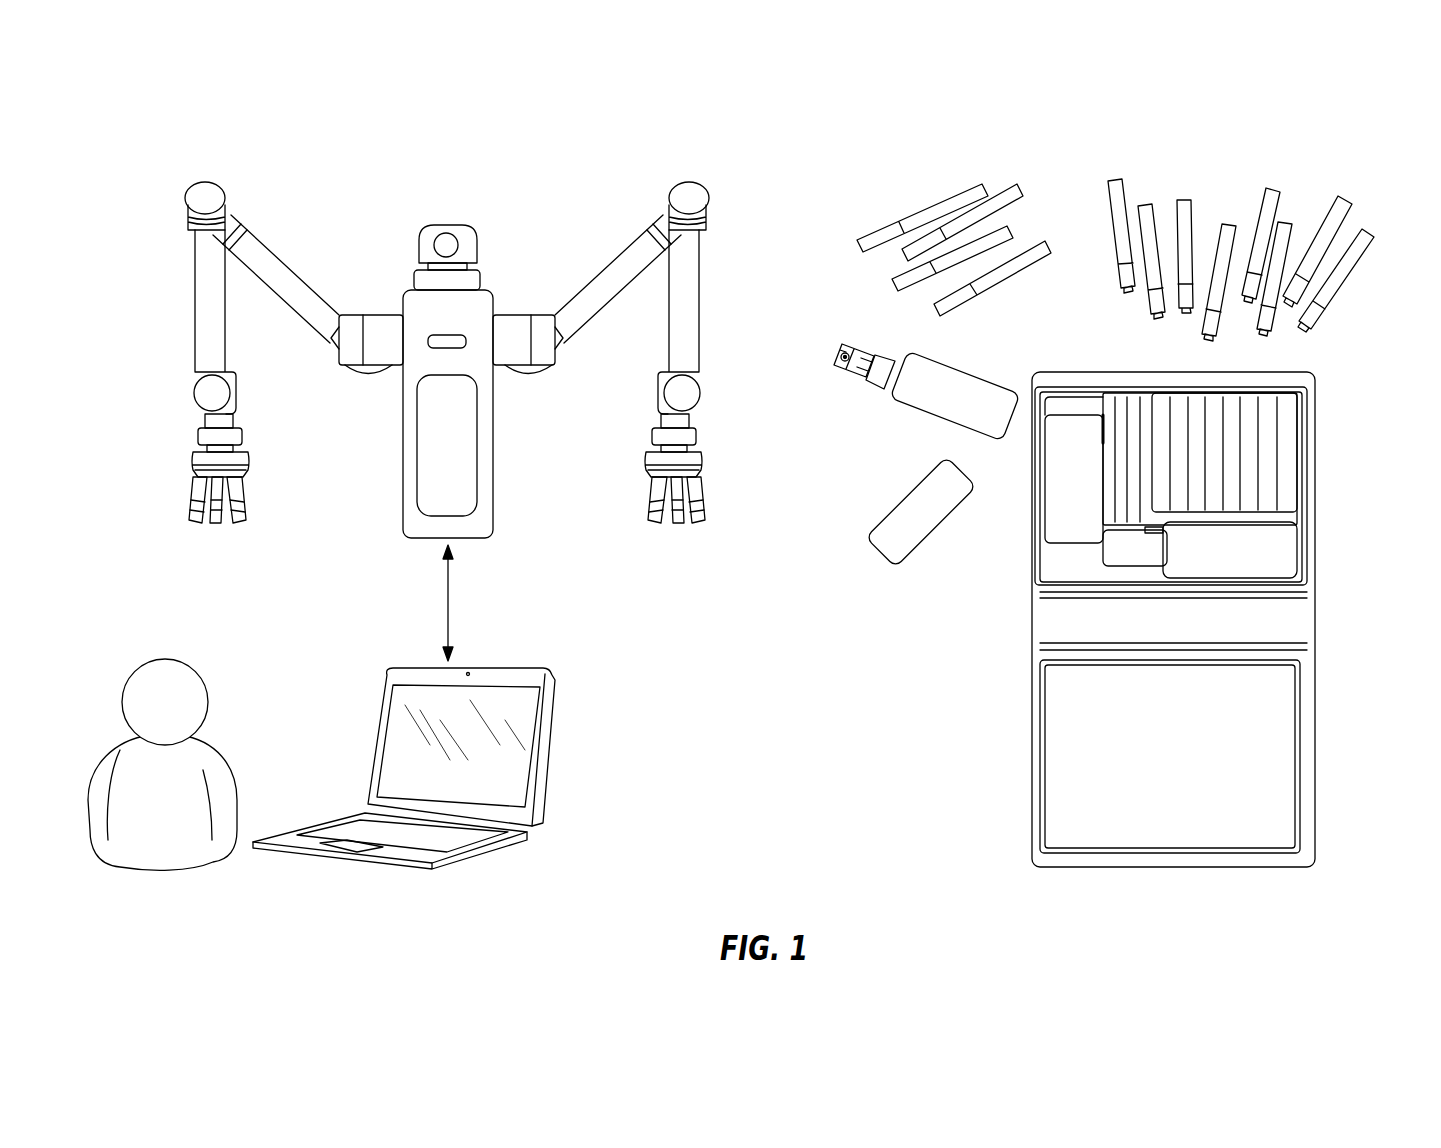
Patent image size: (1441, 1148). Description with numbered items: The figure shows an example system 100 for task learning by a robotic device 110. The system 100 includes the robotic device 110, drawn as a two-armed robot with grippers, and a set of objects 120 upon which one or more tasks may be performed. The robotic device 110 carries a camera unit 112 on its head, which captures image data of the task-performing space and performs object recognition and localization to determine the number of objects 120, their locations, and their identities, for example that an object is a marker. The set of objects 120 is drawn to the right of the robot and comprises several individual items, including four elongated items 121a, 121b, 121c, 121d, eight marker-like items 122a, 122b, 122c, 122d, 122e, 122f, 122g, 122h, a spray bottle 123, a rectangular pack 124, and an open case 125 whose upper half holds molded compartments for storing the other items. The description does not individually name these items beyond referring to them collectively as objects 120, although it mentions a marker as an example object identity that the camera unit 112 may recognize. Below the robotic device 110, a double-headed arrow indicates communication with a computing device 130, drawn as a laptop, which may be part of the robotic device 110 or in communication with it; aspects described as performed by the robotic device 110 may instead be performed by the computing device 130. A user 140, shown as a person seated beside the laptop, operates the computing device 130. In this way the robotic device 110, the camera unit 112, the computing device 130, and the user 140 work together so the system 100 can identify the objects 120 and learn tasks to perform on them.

The system 100 is at (210, 96).
The robotic device 110 is at (665, 197).
The camera unit 112 is at (418, 240).
The set of objects 120 is at (795, 199).
The tool 121a is at (950, 200).
The tool 121b is at (1020, 190).
The tool 121c is at (895, 282).
The tool 121d is at (972, 297).
The marker 122a is at (1125, 180).
The marker 122b is at (1145, 315).
The marker 122c is at (1197, 200).
The marker 122d is at (1203, 332).
The marker 122e is at (1280, 192).
The marker 122f is at (1263, 332).
The marker 122g is at (1348, 205).
The marker 122h is at (1328, 305).
The spray bottle 123 is at (892, 400).
The wipe pack 124 is at (942, 528).
The case 125 is at (1030, 622).
The computing device 130 is at (548, 763).
The user 140 is at (227, 758).